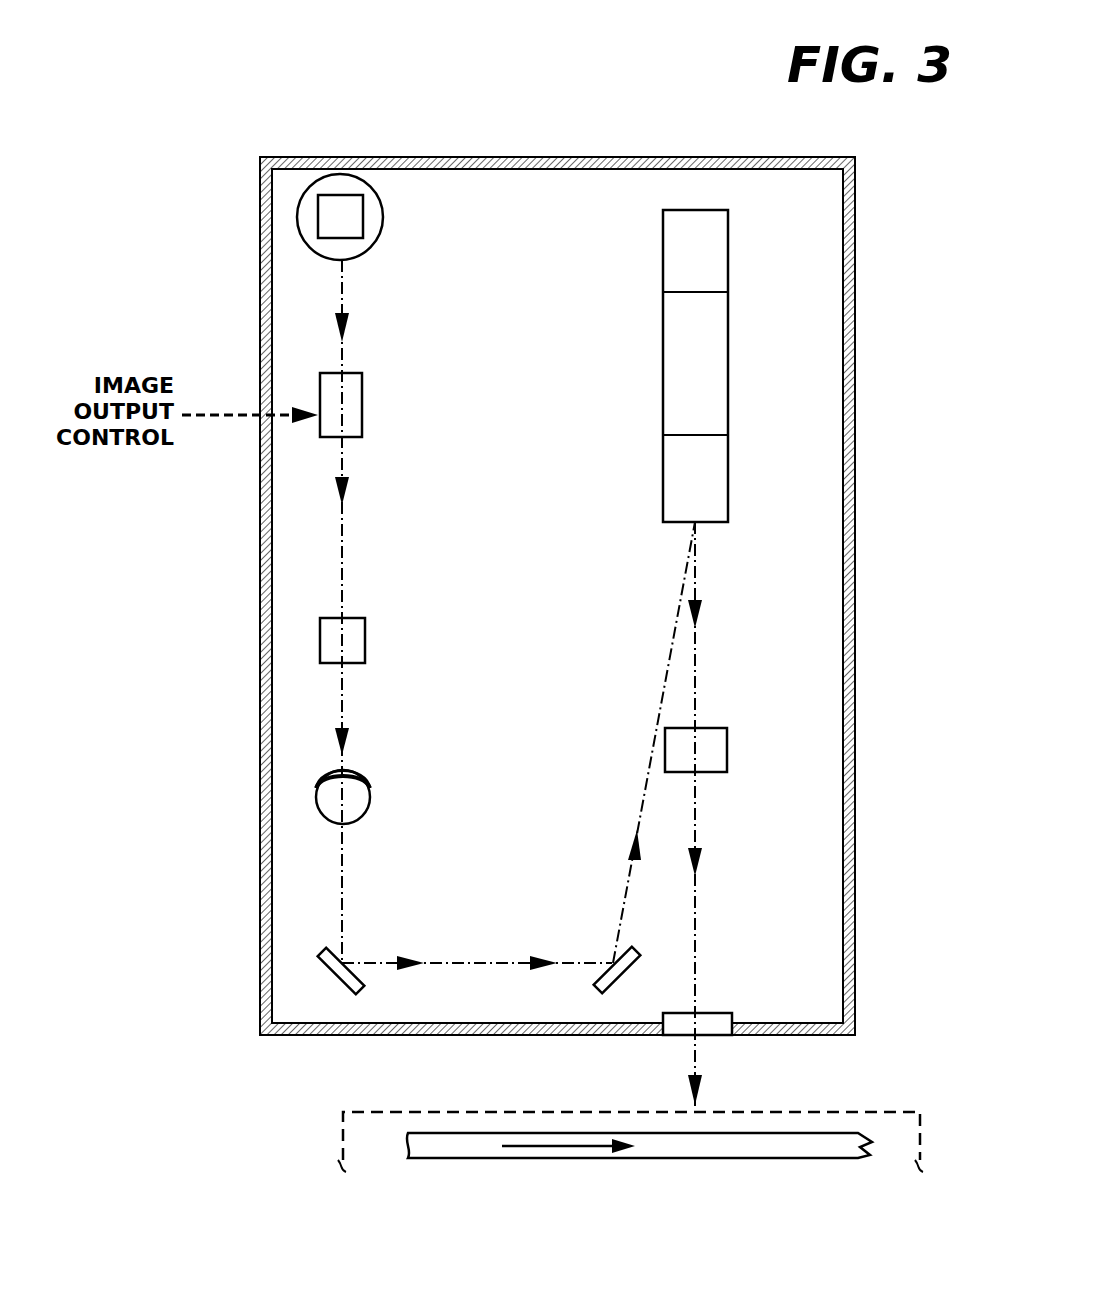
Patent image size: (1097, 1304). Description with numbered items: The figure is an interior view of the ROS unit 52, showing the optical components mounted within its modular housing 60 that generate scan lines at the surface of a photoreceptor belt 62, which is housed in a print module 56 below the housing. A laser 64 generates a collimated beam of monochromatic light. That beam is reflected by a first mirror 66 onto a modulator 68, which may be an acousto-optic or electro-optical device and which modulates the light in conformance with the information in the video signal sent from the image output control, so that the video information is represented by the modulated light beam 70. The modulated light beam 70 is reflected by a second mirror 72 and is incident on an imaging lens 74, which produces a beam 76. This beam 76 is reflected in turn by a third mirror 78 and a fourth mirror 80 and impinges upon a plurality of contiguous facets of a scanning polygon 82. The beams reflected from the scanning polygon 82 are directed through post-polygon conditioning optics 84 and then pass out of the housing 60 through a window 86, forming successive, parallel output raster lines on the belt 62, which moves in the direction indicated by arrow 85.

The ROS unit 52 is at (403, 122).
The print module 56 is at (815, 1112).
The modular housing 60 is at (855, 873).
The photoreceptor belt 62 is at (715, 1158).
The laser 64 is at (307, 194).
The first mirror 66 is at (318, 221).
The modulator 68 is at (320, 400).
The modulated light beam 70 is at (340, 525).
The second mirror 72 is at (325, 632).
The imaging lens 74 is at (323, 797).
The beam 76 is at (342, 897).
The third mirror 78 is at (333, 977).
The fourth mirror 80 is at (622, 978).
The scanning polygon 82 is at (730, 242).
The post-polygon conditioning optics 84 is at (720, 728).
The arrow 85 is at (525, 1148).
The window 86 is at (717, 1037).